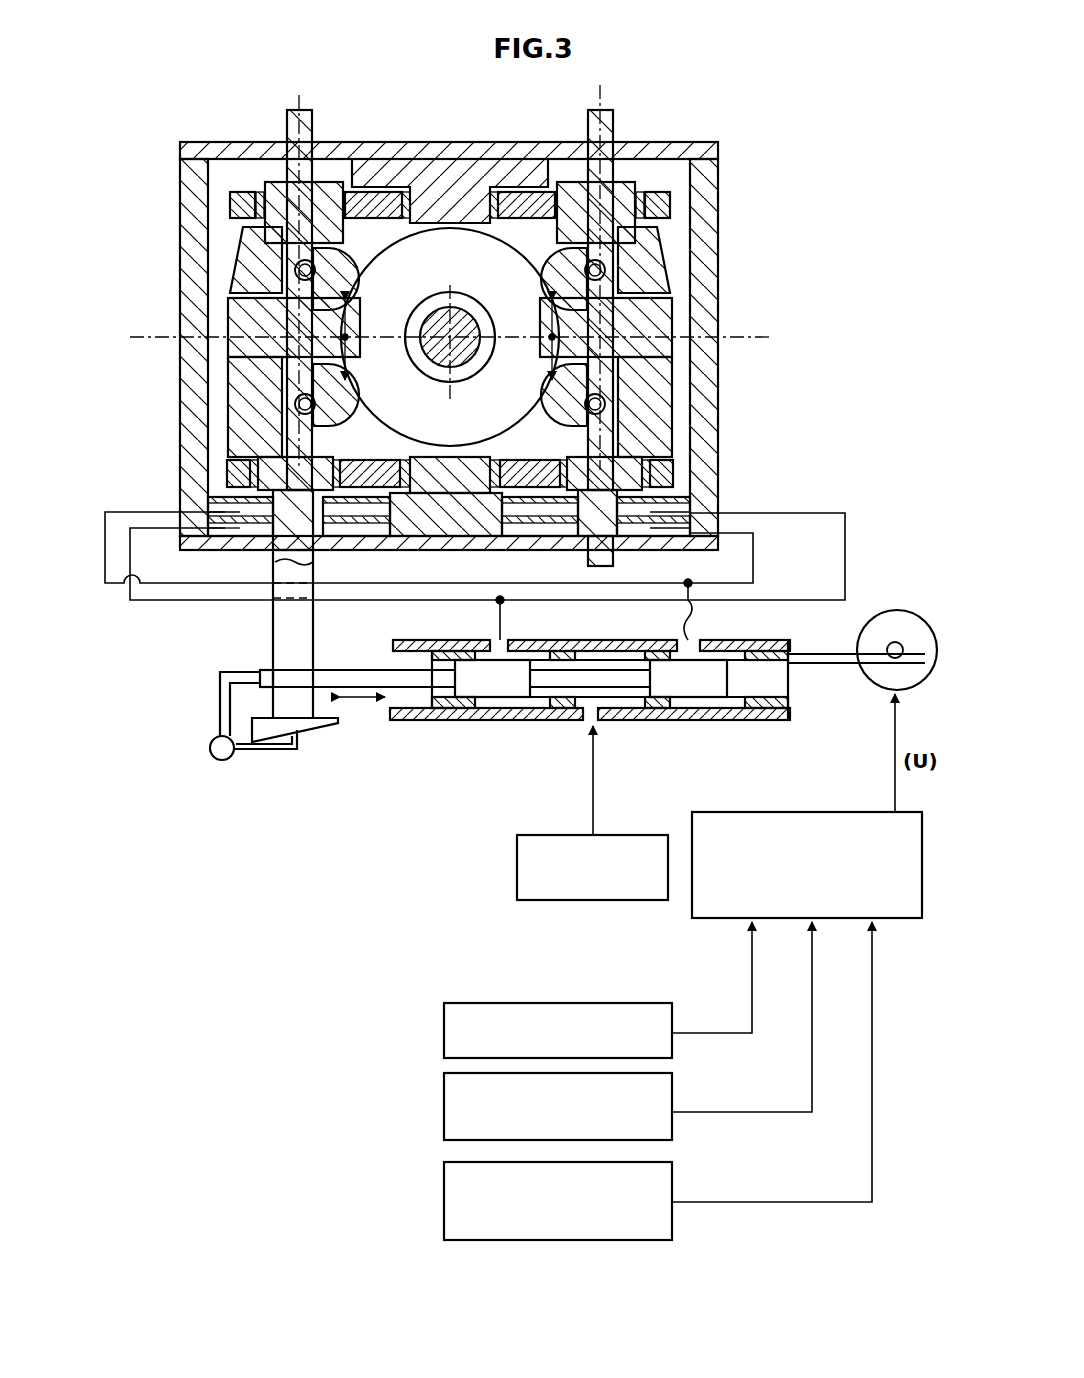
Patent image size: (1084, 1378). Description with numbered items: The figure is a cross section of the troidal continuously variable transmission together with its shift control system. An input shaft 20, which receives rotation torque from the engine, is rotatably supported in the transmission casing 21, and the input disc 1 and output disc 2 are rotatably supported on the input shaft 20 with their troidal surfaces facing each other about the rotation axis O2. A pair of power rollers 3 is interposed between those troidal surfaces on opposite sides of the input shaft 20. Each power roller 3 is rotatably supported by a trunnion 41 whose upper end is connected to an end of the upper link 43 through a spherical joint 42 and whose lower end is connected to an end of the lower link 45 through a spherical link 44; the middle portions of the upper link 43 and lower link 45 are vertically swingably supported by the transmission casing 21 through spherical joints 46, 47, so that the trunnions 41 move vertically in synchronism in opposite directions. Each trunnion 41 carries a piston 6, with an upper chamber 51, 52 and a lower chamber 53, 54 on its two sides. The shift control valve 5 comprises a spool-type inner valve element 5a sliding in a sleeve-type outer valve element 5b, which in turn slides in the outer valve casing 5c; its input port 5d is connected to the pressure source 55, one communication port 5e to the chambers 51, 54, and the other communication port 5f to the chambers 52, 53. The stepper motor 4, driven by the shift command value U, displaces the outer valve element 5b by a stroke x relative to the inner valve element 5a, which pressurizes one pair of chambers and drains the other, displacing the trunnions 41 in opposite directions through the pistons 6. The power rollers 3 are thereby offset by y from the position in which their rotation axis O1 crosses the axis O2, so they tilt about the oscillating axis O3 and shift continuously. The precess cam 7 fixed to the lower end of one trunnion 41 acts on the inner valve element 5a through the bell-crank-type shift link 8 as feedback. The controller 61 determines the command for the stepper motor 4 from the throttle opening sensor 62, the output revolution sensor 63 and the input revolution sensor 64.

The input disc 1 is at (386, 246).
The output disc 2 is at (450, 337).
The power roller 3 is at (365, 288).
The stepper motor 4 is at (897, 611).
The shift control valve 5 is at (592, 697).
The inner valve element 5a is at (676, 700).
The outer valve element 5b is at (761, 720).
The outer valve casing 5c is at (765, 640).
The input port 5d is at (588, 716).
The communication port 5e is at (686, 638).
The communication port 5f is at (496, 638).
The piston 6 is at (670, 500).
The precess cam 7 is at (321, 732).
The shift link 8 is at (243, 752).
The input shaft 20 is at (458, 366).
The transmission casing 21 is at (720, 226).
The trunnion 41 is at (245, 263).
The spherical joint 42 is at (335, 183).
The upper link 43 is at (660, 197).
The spherical link 44 is at (363, 452).
The lower link 45 is at (655, 470).
The spherical joint 46 is at (463, 187).
The spherical joint 47 is at (427, 460).
The upper chamber 51 is at (240, 505).
The upper chamber 52 is at (690, 511).
The lower chamber 53 is at (240, 522).
The lower chamber 54 is at (665, 540).
The pressure source 55 is at (517, 869).
The controller 61 is at (805, 813).
The throttle opening sensor 62 is at (445, 1023).
The output revolution sensor 63 is at (445, 1110).
The input revolution sensor 64 is at (445, 1200).
The rotation axis O1 is at (752, 346).
The rotation axis O2 is at (462, 345).
The oscillating axis O3 is at (287, 104).
The spool displacement x is at (363, 700).
The offset y is at (348, 366).